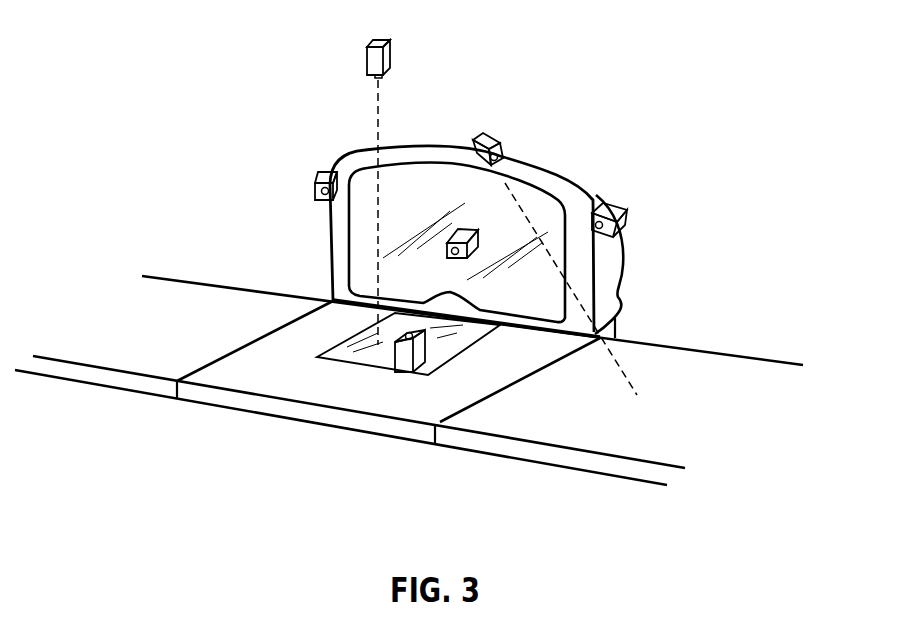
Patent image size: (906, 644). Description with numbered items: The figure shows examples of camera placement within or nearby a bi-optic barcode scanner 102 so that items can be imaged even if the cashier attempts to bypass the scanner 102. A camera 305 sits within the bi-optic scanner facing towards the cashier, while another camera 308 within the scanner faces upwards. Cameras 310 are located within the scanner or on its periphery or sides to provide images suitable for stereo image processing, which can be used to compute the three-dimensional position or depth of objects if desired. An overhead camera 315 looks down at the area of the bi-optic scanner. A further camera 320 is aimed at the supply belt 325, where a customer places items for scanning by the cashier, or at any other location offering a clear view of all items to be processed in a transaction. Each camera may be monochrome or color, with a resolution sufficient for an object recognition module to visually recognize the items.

The barcode scanner 102 is at (627, 256).
The camera facing towards the cashier 305 is at (397, 358).
The camera facing upwards 308 is at (446, 250).
The cameras for stereo image processing 310 is at (315, 183).
The overhead camera 315 is at (390, 53).
The camera aimed at the supply belt 320 is at (487, 133).
The supply belt 325 is at (700, 347).